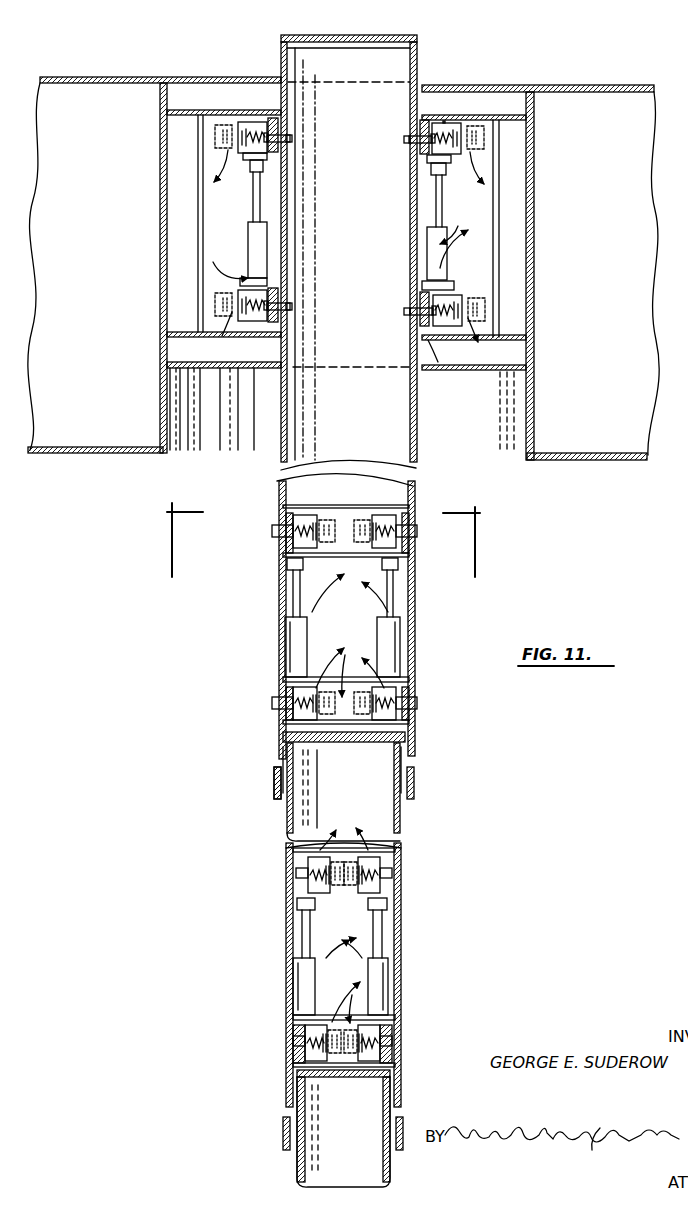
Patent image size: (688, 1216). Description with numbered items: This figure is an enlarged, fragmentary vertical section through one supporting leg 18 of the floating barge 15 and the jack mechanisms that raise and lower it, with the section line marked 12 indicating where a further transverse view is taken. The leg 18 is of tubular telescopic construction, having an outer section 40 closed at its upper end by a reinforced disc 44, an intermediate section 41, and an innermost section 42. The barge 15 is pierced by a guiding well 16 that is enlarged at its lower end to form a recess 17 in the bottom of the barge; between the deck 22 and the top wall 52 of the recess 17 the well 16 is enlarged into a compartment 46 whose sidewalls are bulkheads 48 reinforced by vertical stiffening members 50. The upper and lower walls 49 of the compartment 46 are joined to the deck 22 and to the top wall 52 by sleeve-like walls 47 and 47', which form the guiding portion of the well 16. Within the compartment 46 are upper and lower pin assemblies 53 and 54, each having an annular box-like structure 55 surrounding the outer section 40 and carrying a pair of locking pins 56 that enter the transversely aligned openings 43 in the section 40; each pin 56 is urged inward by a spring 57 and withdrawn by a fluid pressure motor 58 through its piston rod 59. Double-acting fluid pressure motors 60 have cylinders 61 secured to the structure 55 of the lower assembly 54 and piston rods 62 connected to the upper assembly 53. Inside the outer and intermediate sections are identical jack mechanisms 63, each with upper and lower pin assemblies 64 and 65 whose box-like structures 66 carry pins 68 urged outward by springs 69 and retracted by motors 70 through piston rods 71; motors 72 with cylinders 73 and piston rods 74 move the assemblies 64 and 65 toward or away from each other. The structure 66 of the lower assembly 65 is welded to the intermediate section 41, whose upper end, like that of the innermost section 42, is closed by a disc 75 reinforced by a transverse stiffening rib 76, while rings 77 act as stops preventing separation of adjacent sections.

The section line 12- 12 is at (321, 540).
The buoyant body 15 is at (621, 88).
The guiding well 16 is at (368, 254).
The recess 17 is at (482, 440).
The supporting leg 18 is at (292, 38).
The deck 22 is at (142, 78).
The outer section 40 is at (418, 60).
The intermediate section 41 is at (397, 840).
The innermost section 42 is at (298, 1162).
The pin-receiving openings 43 is at (402, 902).
The reinforced disc 44 is at (405, 38).
The compartment 46 is at (212, 226).
The sleeve-like wall 47 is at (474, 87).
The sleeve-like wall 47' is at (224, 395).
The bulkhead 48 is at (532, 272).
The upper and lower walls 49 is at (167, 335).
The vertical stiffening member 50 is at (200, 254).
The top wall 52 is at (505, 365).
The upper pin assembly 53 is at (457, 128).
The lower pin assembly 54 is at (442, 339).
The box-like structure 55 is at (278, 333).
The locking pin 56 is at (287, 305).
The spring 57 is at (442, 331).
The fluid pressure motor 58 is at (218, 314).
The piston rod 59 is at (287, 300).
The double-acting fluid pressure motor 60 is at (243, 258).
The cylinder 61 is at (427, 246).
The piston rod 62 is at (252, 195).
The jack mechanism 63 is at (403, 602).
The upper pin assembly 64 is at (402, 852).
The lower pin assembly 65 is at (300, 1023).
The box-like structure 66 is at (379, 1018).
The locking pin 68 is at (404, 1042).
The spring 69 is at (296, 1054).
The fluid pressure motor 70 is at (327, 1005).
The piston rod 71 is at (386, 705).
The double-acting fluid pressure motor 72 is at (294, 595).
The cylinder 73 is at (379, 987).
The piston rod 74 is at (384, 930).
The disc 75 is at (333, 1078).
The transverse stiffening rib 76 is at (367, 1085).
The ring 77 is at (290, 1132).